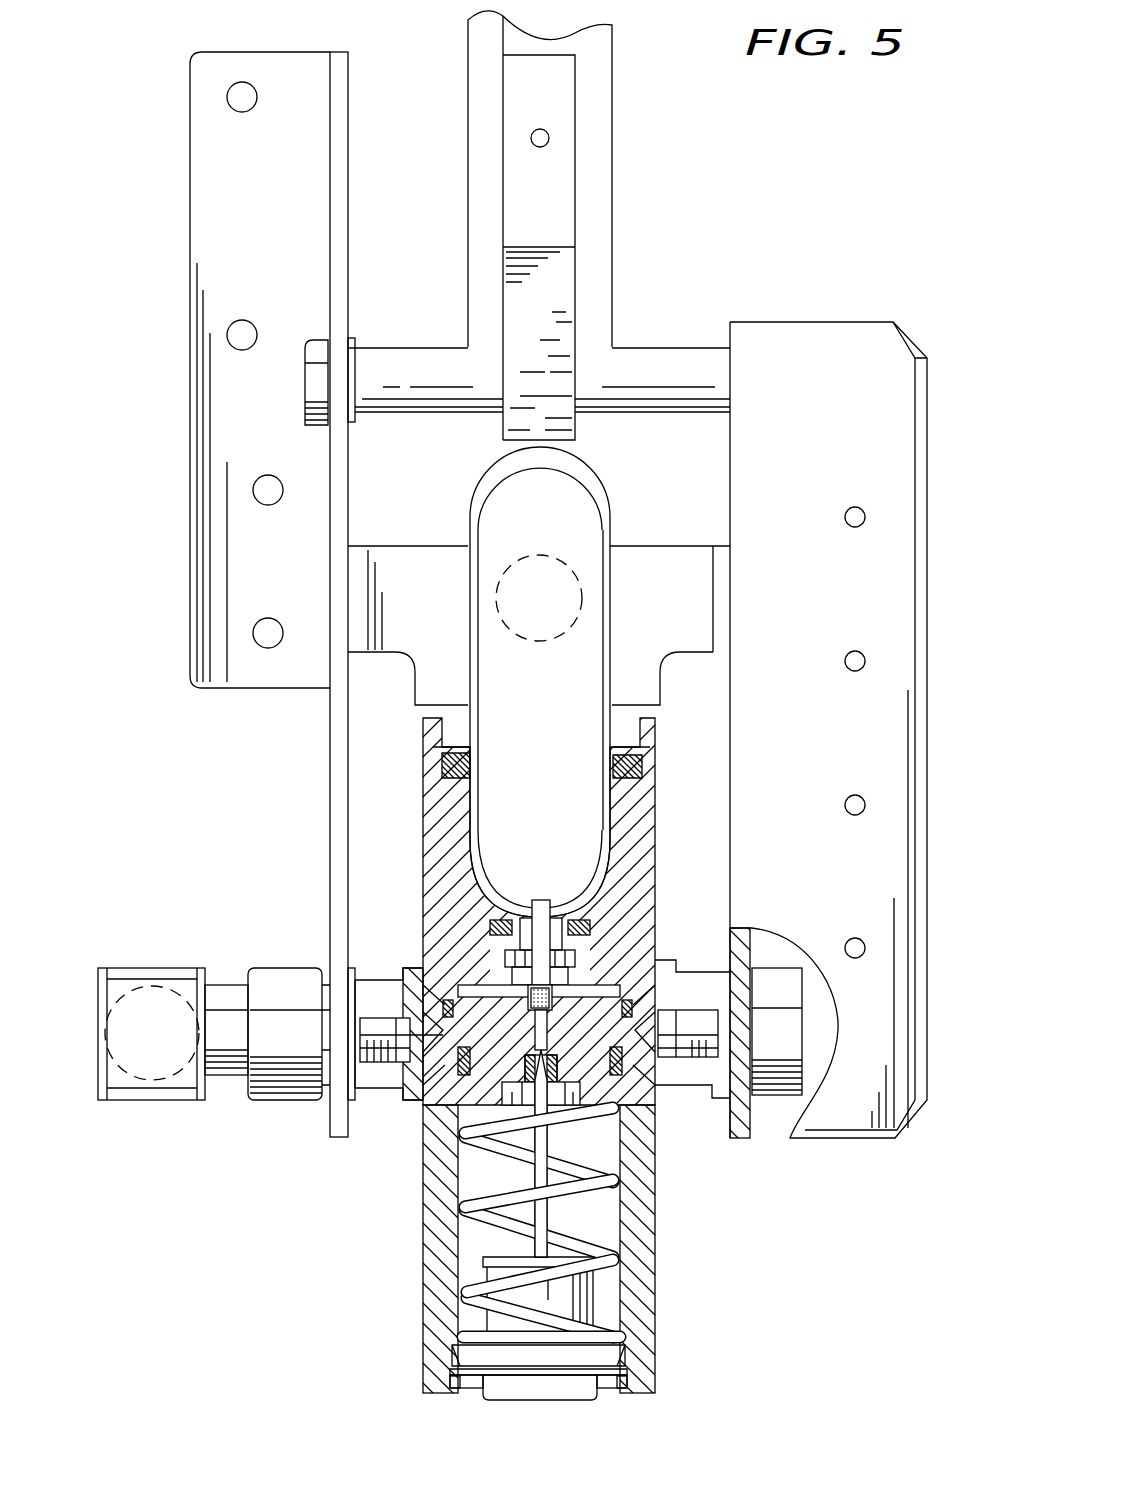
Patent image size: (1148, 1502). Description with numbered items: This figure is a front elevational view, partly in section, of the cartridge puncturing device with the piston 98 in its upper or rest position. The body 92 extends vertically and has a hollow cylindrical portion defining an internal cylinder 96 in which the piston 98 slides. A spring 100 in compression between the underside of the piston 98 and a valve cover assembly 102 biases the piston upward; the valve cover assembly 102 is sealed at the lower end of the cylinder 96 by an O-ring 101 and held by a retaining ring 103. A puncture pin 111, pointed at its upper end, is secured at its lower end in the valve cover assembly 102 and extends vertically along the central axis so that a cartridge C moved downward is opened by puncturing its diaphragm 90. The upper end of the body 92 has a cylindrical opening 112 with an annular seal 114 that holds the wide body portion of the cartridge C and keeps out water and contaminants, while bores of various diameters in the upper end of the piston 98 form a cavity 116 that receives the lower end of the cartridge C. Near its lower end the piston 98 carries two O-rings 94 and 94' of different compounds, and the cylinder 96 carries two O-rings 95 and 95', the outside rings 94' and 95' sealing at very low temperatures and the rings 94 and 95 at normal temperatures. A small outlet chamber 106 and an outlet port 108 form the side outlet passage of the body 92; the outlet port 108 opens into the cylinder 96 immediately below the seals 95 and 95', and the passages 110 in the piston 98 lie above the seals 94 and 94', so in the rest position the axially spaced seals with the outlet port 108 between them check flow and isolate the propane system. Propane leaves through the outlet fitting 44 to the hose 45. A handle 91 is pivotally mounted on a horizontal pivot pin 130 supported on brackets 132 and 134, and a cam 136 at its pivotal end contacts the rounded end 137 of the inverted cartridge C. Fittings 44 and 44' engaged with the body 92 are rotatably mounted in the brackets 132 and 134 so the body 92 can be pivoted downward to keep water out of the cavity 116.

The outlet fitting 44 is at (289, 996).
The mounting fitting 44' is at (803, 983).
The hose 45 is at (152, 987).
The diaphragm 90 is at (543, 930).
The handle 91 is at (595, 187).
The body 92 is at (412, 1195).
The O-ring 94 is at (683, 1093).
The O-ring 94' is at (688, 1102).
The O-ring 95 is at (417, 993).
The O-ring 95' is at (405, 961).
The internal cylinder 96 is at (503, 1225).
The piston 98 is at (608, 903).
The spring 100 is at (478, 1287).
The O-ring 101 is at (627, 1357).
The valve cover assembly 102 is at (512, 1387).
The retaining ring 103 is at (617, 1382).
The outlet chamber 106 is at (400, 1062).
The outlet port 108 is at (417, 1105).
The passages 110 is at (625, 960).
The puncture pin 111 is at (623, 1220).
The cylindrical opening 112 is at (612, 722).
The annular seal 114 is at (620, 770).
The cavity 116 is at (592, 855).
The pivot pin 130 is at (658, 360).
The bracket 132 is at (190, 238).
The bracket 134 is at (825, 338).
The cam 136 is at (557, 280).
The rounded end 137 is at (583, 463).
The cartridge C is at (598, 530).